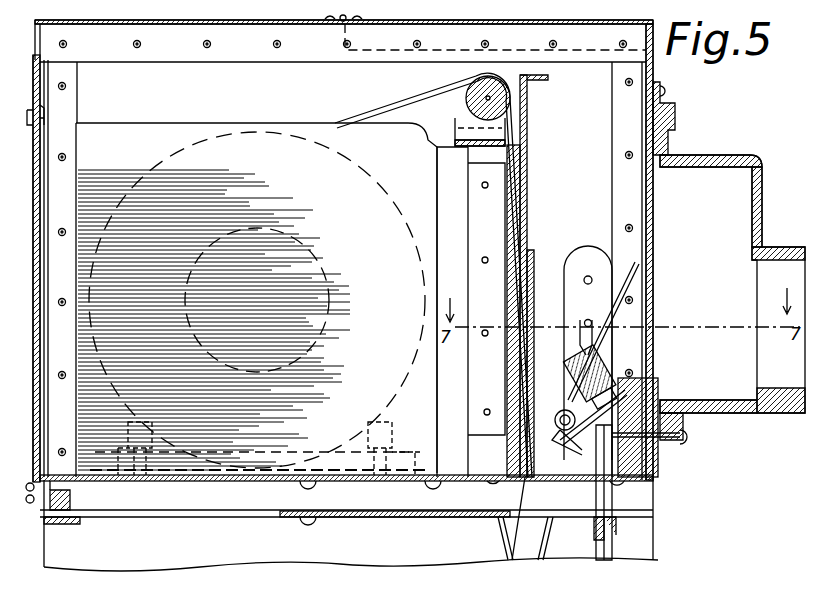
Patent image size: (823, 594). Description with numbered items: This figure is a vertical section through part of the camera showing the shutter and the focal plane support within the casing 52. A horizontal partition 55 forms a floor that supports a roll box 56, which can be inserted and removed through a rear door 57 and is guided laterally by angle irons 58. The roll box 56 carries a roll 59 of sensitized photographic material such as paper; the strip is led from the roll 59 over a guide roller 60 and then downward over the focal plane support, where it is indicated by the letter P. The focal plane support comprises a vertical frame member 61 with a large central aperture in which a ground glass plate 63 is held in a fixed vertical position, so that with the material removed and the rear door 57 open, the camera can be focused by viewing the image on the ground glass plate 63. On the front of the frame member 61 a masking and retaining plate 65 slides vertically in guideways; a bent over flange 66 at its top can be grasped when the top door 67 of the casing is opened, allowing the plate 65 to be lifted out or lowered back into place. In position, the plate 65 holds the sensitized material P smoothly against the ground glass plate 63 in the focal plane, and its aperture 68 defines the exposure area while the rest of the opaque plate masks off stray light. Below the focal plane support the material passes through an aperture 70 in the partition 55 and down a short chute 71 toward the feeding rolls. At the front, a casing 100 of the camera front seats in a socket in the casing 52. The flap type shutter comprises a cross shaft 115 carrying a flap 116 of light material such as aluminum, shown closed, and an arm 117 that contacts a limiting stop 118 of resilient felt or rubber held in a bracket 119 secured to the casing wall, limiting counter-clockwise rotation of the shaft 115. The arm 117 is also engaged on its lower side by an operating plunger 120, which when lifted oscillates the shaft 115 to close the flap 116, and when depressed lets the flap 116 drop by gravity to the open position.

The casing portion 52 is at (655, 70).
The horizontal partition 55 is at (428, 480).
The roll box 56 is at (152, 128).
The rear door 57 is at (40, 143).
The angle irons 58 is at (408, 460).
The roll of sensitized photographic material 59 is at (388, 196).
The guide roller 60 is at (470, 96).
The vertical frame member 61 is at (497, 175).
The ground glass plate 63 is at (513, 345).
The masking and retaining plate 65 is at (530, 138).
The bent over flange 66 is at (550, 80).
The top door 67 is at (500, 22).
The aperture 68 is at (536, 258).
The aperture 70 is at (538, 481).
The chute 71 is at (555, 535).
The casing 100 is at (715, 160).
The cross shaft 115 is at (565, 440).
The flap 116 is at (637, 272).
The arm 117 is at (630, 395).
The limiting stop 118 is at (612, 380).
The bracket 119 is at (580, 320).
The operating plunger 120 is at (612, 548).
The sensitized material P is at (520, 125).